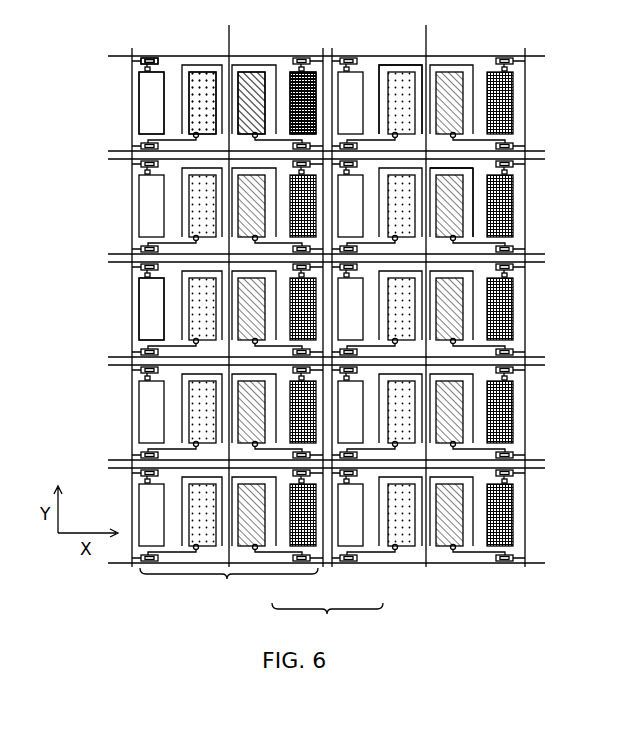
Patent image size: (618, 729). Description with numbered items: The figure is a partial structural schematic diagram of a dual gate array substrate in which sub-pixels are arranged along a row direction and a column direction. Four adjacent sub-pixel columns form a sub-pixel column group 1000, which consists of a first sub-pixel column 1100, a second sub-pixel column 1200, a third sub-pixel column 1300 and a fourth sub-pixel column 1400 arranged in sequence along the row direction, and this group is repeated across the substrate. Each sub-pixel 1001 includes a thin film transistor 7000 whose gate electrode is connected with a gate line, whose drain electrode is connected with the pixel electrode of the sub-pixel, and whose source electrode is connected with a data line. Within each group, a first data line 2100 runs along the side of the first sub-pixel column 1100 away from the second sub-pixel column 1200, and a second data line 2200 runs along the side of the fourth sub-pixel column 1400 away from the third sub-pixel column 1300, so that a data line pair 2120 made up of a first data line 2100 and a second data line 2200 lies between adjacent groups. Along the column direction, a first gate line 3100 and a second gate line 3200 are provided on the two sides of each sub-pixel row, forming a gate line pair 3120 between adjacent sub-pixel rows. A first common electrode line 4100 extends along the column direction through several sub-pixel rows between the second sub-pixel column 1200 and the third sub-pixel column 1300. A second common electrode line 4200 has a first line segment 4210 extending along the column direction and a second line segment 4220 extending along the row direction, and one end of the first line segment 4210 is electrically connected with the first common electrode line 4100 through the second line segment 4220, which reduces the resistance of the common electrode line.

The sub-pixel column group 1000 is at (229, 587).
The sub-pixel 1001 is at (148, 335).
The first sub-pixel column 1100 is at (154, 81).
The second sub-pixel column 1200 is at (203, 83).
The third sub-pixel column 1300 is at (243, 83).
The fourth sub-pixel column 1400 is at (302, 95).
The first data line 2100 is at (132, 418).
The second data line 2200 is at (323, 567).
The data line pair 2120 is at (327, 621).
The first gate line 3100 is at (122, 56).
The second gate line 3200 is at (118, 152).
The gate line pair 3120 is at (55, 143).
The first common electrode line 4100 is at (427, 53).
The second common electrode line 4200 is at (410, 63).
The first line segment 4210 is at (475, 222).
The second line segment 4220 is at (475, 169).
The thin film transistor 7000 is at (141, 64).